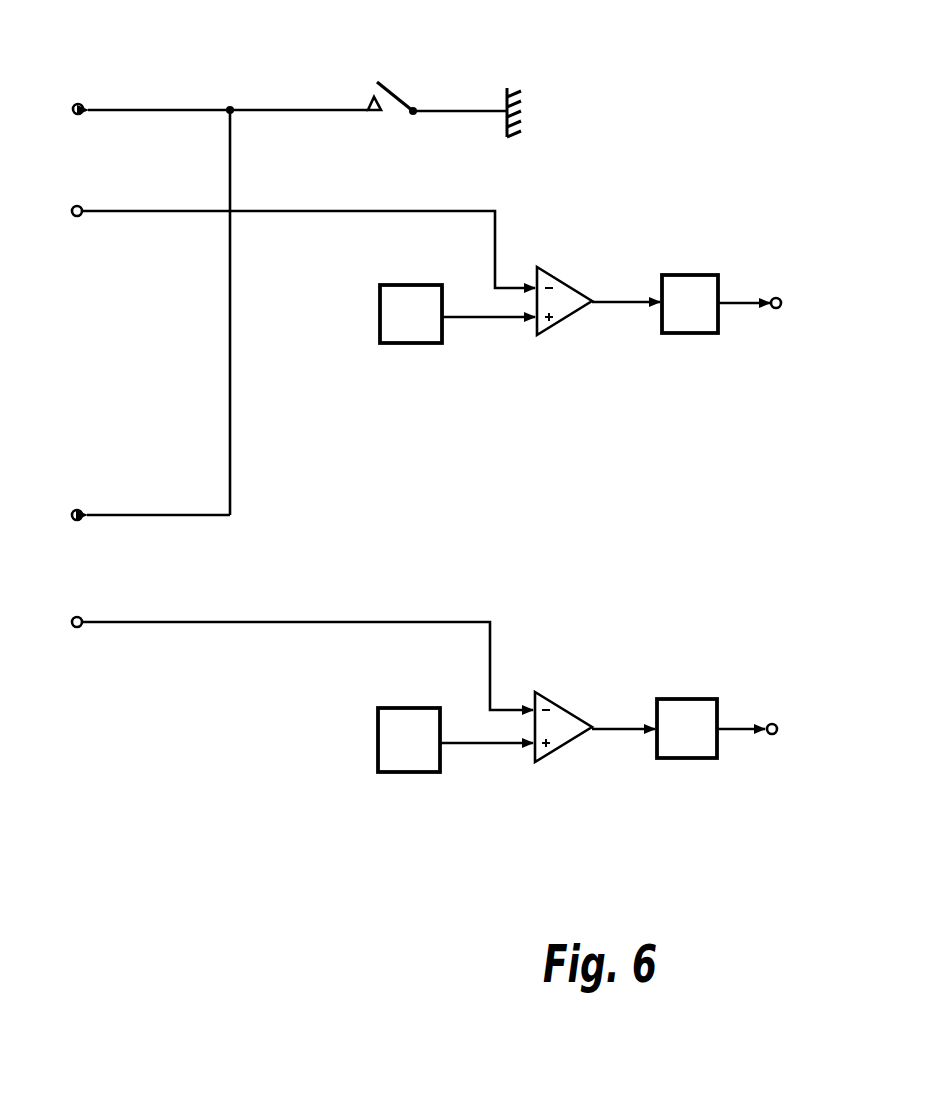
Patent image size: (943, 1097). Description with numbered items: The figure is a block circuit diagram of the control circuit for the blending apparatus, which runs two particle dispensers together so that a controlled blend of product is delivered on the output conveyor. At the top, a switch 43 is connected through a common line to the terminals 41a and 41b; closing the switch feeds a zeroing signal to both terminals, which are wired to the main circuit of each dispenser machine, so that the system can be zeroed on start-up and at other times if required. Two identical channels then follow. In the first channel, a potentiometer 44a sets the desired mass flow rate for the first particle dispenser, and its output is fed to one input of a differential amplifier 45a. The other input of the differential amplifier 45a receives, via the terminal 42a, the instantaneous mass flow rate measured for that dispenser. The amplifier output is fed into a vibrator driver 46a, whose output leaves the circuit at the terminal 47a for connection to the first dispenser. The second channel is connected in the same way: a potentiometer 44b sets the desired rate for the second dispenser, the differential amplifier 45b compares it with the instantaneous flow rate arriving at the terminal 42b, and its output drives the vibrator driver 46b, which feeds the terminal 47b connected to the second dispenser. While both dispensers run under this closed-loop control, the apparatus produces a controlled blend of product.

The terminal 41a is at (127, 108).
The terminal 42a is at (276, 240).
The switch 43 is at (400, 94).
The potentiometer 44a is at (412, 325).
The differential amplifier 45a is at (560, 308).
The vibrator driver 46a is at (697, 318).
The output terminal 47a is at (778, 303).
The terminal 41b is at (125, 514).
The terminal 42b is at (274, 657).
The potentiometer 44b is at (410, 755).
The differential amplifier 45b is at (560, 733).
The vibrator driver 46b is at (698, 742).
The output terminal 47b is at (775, 729).